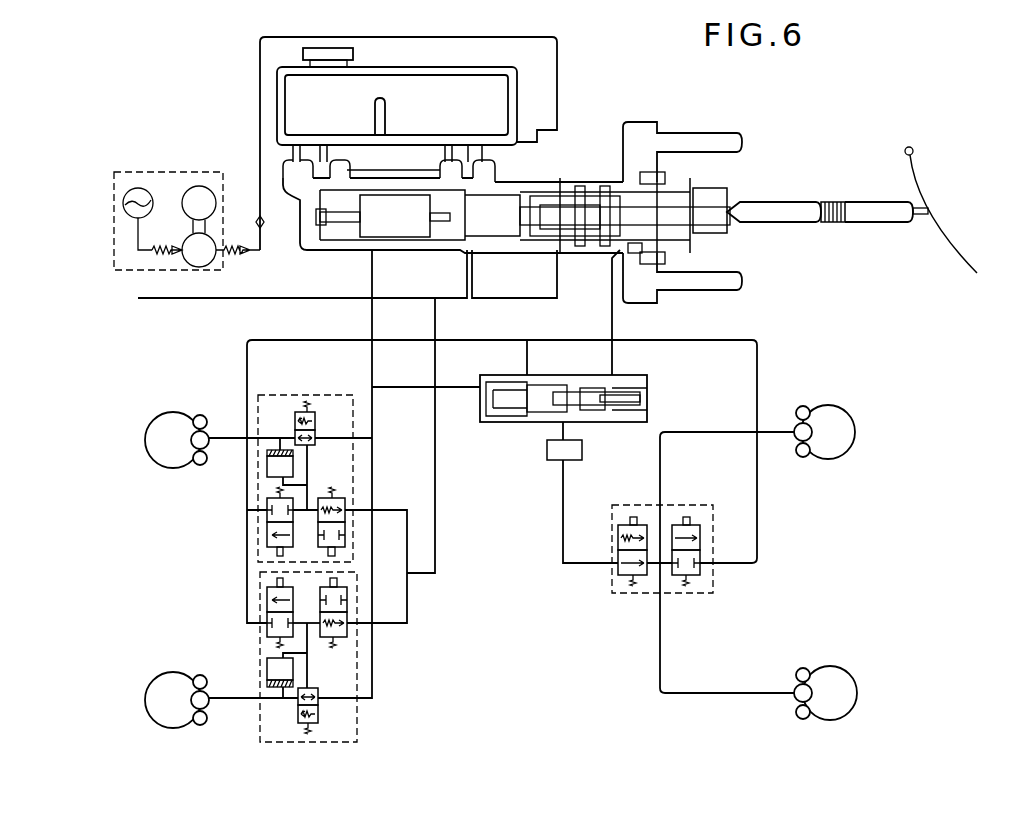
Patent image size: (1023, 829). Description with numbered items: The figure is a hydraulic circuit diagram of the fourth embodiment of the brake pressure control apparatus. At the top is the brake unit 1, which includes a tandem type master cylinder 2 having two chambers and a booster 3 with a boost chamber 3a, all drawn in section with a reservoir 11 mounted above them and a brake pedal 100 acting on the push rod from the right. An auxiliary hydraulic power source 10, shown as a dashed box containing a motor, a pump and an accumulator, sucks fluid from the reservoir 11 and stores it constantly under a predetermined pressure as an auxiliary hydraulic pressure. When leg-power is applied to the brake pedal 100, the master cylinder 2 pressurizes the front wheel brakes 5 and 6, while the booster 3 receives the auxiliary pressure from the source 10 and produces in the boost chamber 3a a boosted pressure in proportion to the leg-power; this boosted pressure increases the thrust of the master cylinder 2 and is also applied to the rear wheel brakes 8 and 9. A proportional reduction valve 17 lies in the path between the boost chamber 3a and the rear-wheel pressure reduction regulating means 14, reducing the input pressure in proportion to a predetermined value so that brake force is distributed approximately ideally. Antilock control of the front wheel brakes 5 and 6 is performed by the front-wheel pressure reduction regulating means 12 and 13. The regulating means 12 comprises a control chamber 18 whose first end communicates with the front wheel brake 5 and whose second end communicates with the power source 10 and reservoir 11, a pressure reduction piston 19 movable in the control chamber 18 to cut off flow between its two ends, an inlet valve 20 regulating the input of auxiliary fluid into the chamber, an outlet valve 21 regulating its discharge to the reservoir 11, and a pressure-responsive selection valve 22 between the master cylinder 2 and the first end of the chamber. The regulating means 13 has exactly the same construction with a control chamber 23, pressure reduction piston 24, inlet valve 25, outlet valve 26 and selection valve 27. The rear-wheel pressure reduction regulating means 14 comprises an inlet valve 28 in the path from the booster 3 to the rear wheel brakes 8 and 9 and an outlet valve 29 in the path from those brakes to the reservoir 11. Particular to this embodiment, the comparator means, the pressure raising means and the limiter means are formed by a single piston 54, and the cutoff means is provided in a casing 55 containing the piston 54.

The brake unit 1 is at (583, 103).
The master cylinder 2 is at (417, 262).
The booster 3 is at (576, 160).
The boost chamber 3a is at (634, 270).
The front wheel brake 5 is at (205, 436).
The front wheel brake 6 is at (207, 696).
The rear wheel brake 8 is at (798, 420).
The rear wheel brake 9 is at (796, 690).
The auxiliary hydraulic power source 10 is at (165, 168).
The reservoir 11 is at (452, 77).
The front-wheel pressure reduction regulating means 12 is at (283, 392).
The front-wheel pressure reduction regulating means 13 is at (250, 578).
The rear-wheel pressure reduction regulating means 14 is at (680, 504).
The proportional reduction valve 17 is at (583, 452).
The control chamber 18 is at (267, 474).
The pressure reduction piston 19 is at (268, 455).
The inlet valve 20 is at (347, 500).
The outlet valve 21 is at (267, 506).
The pressure-responsive selection valve 22 is at (316, 412).
The control chamber 23 is at (270, 660).
The pressure reduction piston 24 is at (268, 681).
The inlet valve 25 is at (345, 588).
The outlet valve 26 is at (267, 596).
The pressure-responsive selection valve 27 is at (320, 713).
The inlet valve 28 is at (620, 535).
The outlet valve 29 is at (702, 531).
The piston 54 is at (520, 404).
The casing 55 is at (493, 420).
The brake pedal 100 is at (952, 243).